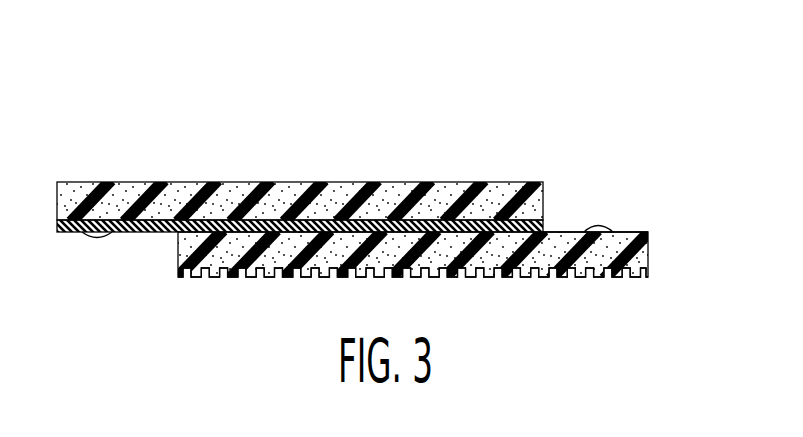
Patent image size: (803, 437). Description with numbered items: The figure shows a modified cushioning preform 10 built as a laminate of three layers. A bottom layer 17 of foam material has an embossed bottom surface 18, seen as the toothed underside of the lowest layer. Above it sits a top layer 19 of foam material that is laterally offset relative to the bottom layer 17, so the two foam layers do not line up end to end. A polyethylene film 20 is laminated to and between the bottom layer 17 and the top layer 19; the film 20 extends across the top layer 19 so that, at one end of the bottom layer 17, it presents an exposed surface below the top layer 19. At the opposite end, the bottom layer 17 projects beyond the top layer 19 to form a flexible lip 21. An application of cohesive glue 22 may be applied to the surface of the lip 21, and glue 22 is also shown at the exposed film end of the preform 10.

The cushioning preform 10 is at (168, 134).
The bottom layer 17 is at (177, 247).
The embossed bottom surface 18 is at (258, 278).
The top layer 19 is at (345, 184).
The polyethylene film 20 is at (543, 230).
The flexible lip 21 is at (631, 232).
The cohesive glue 22 is at (93, 236).